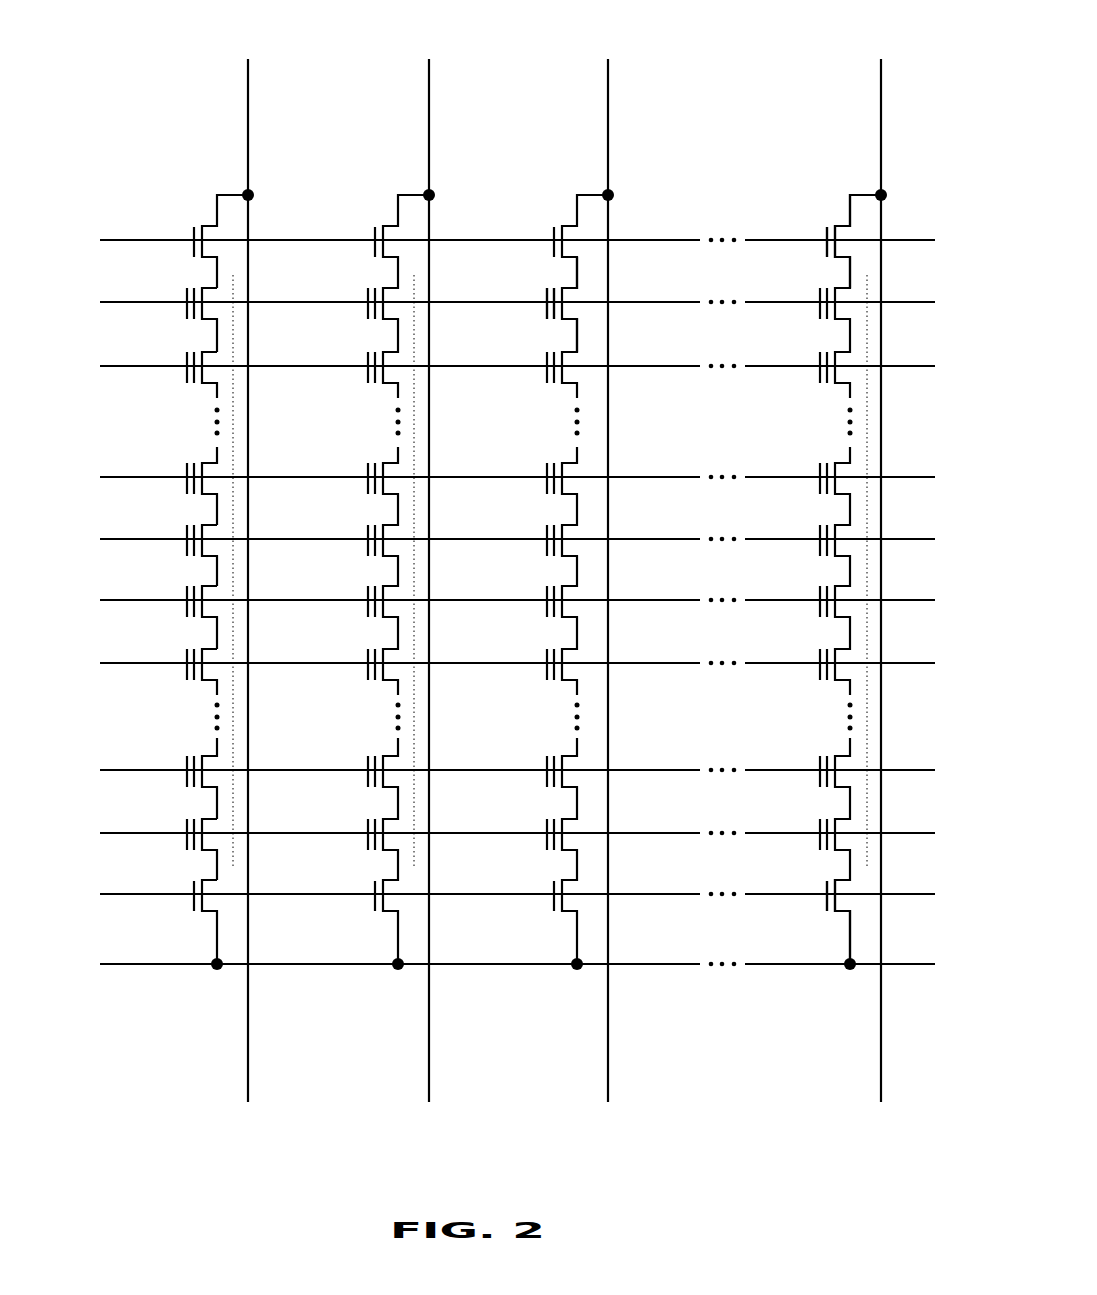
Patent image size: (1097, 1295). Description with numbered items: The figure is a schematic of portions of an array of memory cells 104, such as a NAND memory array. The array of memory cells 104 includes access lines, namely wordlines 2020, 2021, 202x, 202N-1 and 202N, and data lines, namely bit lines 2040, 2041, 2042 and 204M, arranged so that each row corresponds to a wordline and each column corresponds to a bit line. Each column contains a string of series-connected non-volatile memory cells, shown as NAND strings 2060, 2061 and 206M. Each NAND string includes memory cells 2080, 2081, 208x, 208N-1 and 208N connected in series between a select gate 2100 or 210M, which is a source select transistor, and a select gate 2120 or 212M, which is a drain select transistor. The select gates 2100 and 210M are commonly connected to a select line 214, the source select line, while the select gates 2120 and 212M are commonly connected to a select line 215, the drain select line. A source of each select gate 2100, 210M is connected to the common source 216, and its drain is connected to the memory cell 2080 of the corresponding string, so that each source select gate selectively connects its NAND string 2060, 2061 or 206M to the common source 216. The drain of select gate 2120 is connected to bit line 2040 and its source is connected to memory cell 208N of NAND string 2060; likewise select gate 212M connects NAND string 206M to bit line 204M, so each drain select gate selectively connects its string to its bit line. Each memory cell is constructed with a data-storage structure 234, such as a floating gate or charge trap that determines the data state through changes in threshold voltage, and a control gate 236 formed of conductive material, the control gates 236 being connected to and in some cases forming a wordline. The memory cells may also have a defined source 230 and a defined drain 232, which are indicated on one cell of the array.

The array of memory cells 104 is at (784, 54).
The bit line 2040 is at (250, 107).
The bit line 2041 is at (431, 107).
The bit line 2042 is at (610, 107).
The bit line 204M is at (879, 115).
The select line 215 is at (782, 240).
The wordline 202N is at (148, 300).
The wordline 202N-1 is at (775, 368).
The wordline 202x is at (772, 665).
The wordline 2021 is at (772, 768).
The wordline 2020 is at (152, 831).
The select line 214 is at (772, 892).
The common source 216 is at (160, 966).
The select gate 2120 is at (210, 222).
The select gate 212M is at (843, 222).
The memory cell 208N is at (203, 322).
The memory cell 208N-1 is at (203, 385).
The memory cell 208x is at (205, 681).
The memory cell 2081 is at (210, 753).
The memory cell 2080 is at (203, 852).
The select gate 2100 is at (208, 912).
The select gate 210M is at (840, 912).
The NAND string 2060 is at (236, 575).
The NAND string 2061 is at (417, 575).
The NAND string 206M is at (870, 575).
The source/drain 230 is at (581, 324).
The source/drain 232 is at (580, 278).
The data-storage structure 234 is at (552, 284).
The control gate 236 is at (547, 320).